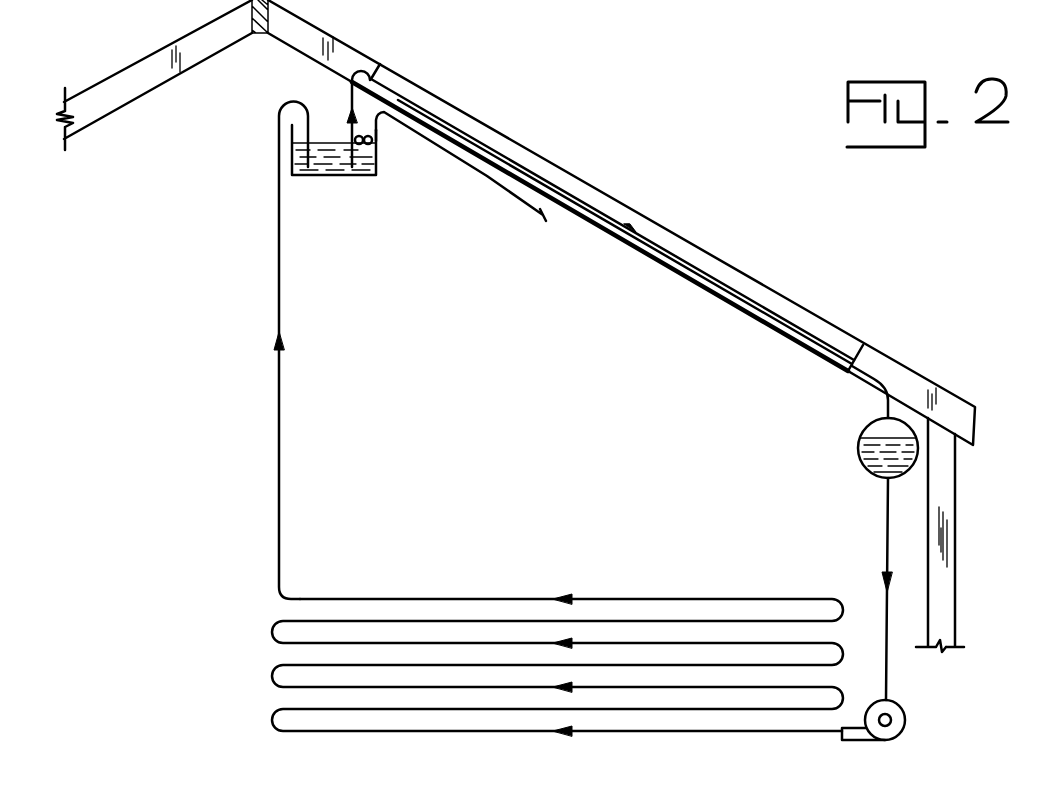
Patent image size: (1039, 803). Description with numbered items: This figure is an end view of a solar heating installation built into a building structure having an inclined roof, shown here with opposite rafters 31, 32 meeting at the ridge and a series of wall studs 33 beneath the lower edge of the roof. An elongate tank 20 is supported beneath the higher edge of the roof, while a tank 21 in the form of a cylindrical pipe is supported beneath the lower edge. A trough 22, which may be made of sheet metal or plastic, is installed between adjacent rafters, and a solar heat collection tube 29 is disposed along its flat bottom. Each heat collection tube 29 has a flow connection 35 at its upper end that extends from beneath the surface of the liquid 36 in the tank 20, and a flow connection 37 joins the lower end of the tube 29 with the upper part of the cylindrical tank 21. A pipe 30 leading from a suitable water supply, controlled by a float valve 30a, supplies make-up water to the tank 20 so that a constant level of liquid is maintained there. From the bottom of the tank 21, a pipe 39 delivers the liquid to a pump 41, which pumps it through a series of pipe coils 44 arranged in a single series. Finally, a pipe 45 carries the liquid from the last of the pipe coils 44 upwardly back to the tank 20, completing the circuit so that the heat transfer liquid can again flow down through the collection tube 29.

The elongate tank 20 is at (378, 137).
The tank 21 is at (858, 449).
The trough 22 is at (650, 222).
The solar heat collection tube 29 is at (745, 286).
The pipe 30 is at (498, 191).
The float valve 30a is at (367, 145).
The rafter 31 is at (138, 60).
The rafter 32 is at (355, 46).
The wall stud 33 is at (958, 575).
The flow connection 35 is at (350, 93).
The liquid 36 is at (325, 143).
The flow connection 37 is at (880, 368).
The pipe 39 is at (887, 532).
The pump 41 is at (906, 721).
The pipe coil 44 is at (666, 643).
The pipe 45 is at (281, 290).